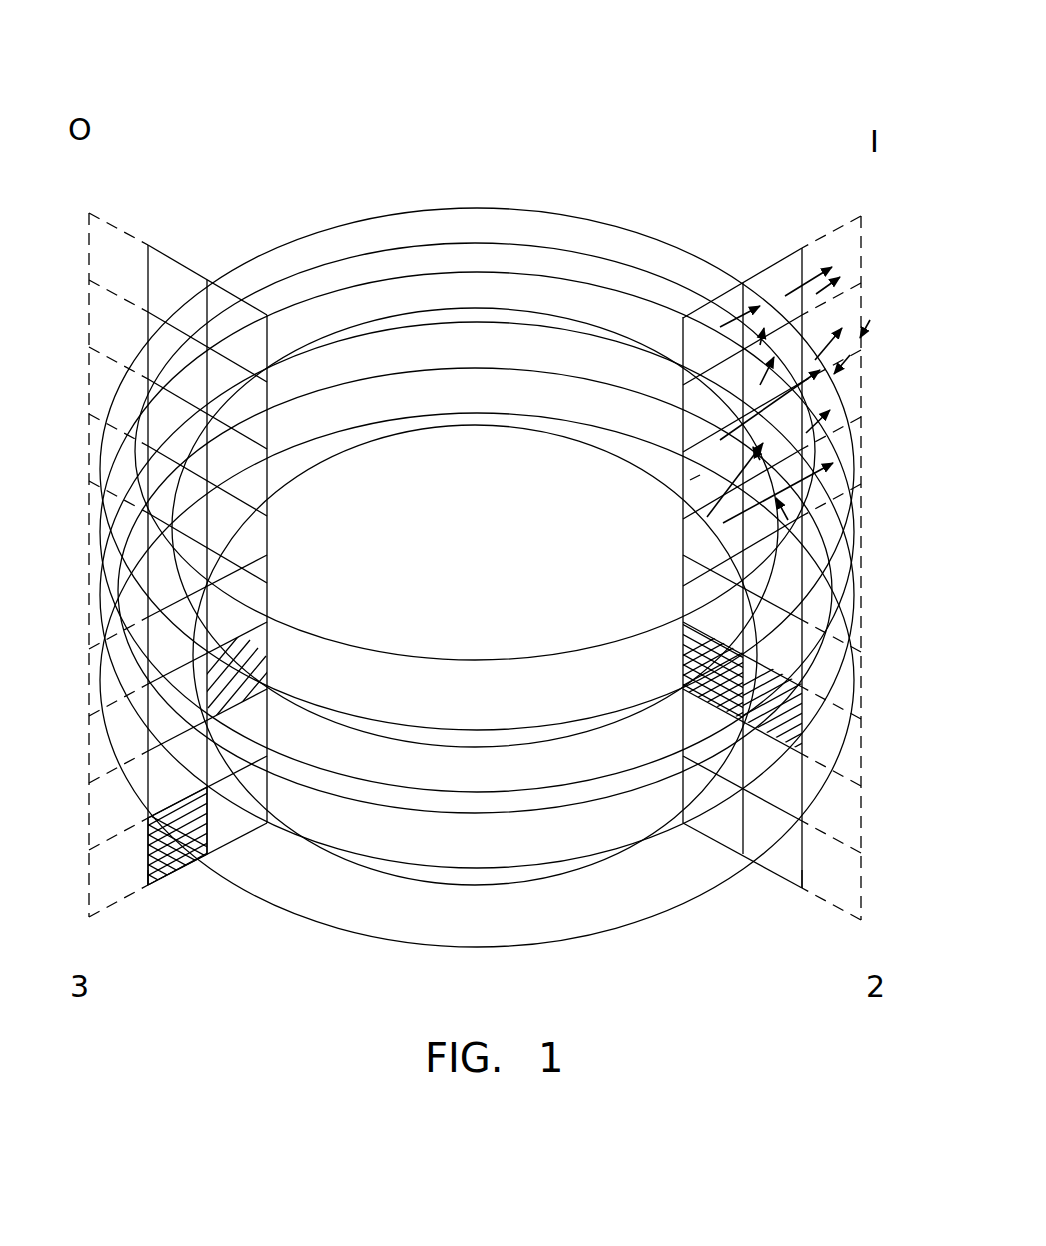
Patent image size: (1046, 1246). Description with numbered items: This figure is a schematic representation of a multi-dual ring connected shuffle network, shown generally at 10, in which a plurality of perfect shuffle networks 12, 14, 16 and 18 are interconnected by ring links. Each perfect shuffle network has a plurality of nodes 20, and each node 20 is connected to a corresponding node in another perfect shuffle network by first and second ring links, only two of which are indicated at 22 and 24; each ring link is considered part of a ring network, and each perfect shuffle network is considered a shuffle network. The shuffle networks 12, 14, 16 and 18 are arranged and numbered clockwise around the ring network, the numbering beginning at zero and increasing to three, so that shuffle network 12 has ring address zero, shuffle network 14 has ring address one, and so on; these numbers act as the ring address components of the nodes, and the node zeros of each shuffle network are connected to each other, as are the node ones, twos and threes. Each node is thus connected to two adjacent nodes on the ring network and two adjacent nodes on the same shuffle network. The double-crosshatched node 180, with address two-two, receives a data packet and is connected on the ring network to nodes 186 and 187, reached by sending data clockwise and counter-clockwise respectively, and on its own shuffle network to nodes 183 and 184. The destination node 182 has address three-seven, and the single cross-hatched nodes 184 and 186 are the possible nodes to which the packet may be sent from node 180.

The multi-dual ring connected shuffle network 10 is at (534, 98).
The perfect shuffle network 12 is at (178, 254).
The perfect shuffle network 14 is at (782, 254).
The perfect shuffle network 16 is at (763, 876).
The perfect shuffle network 18 is at (150, 893).
The node 20 is at (232, 318).
The first ring link 22 is at (456, 194).
The second ring link 24 is at (475, 506).
The node 180 is at (700, 722).
The node 182 is at (172, 862).
The node 183 is at (805, 601).
The node 184 is at (790, 722).
The node 186 is at (262, 734).
The node 187 is at (690, 480).